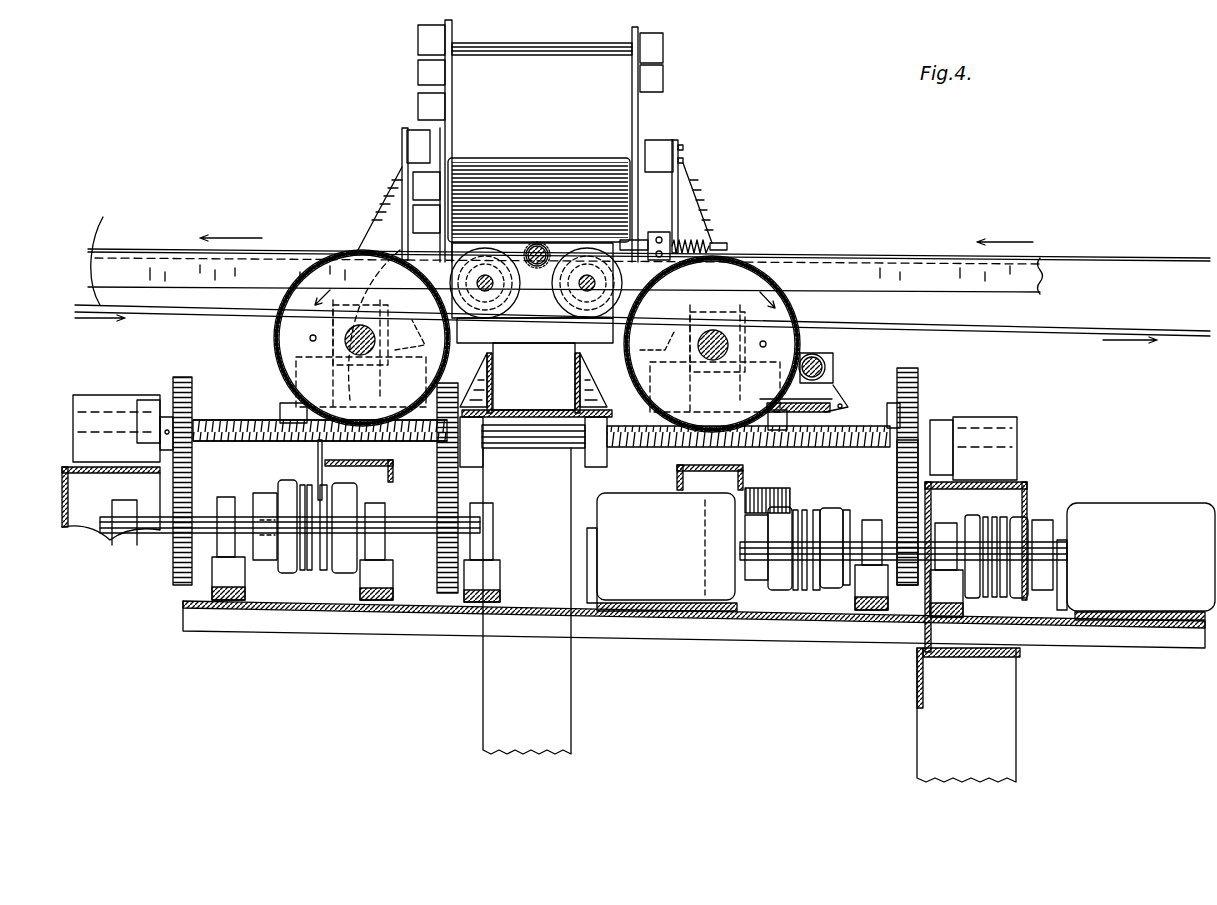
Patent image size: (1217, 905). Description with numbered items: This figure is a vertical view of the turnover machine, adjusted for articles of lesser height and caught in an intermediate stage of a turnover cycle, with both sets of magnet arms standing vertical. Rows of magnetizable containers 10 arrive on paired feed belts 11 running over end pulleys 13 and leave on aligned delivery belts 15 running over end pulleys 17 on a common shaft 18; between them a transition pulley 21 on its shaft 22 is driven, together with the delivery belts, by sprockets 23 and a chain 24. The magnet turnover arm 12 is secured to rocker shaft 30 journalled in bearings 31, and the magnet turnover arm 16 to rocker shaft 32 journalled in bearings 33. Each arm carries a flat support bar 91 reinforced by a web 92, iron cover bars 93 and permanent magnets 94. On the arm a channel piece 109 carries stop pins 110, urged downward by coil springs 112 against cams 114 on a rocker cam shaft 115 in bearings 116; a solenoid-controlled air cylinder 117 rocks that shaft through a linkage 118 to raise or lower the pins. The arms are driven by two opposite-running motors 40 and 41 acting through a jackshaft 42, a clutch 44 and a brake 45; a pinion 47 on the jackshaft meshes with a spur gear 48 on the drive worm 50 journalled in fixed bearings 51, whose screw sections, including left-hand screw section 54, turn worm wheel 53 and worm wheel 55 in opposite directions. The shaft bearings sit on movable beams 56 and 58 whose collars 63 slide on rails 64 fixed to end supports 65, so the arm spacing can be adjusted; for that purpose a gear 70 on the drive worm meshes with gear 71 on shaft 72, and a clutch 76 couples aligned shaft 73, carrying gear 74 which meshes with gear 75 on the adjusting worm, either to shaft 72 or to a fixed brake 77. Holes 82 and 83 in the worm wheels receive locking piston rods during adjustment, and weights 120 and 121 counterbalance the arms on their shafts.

The containers 10 is at (553, 43).
The feed belts 11 is at (1162, 250).
The magnet turnover arm 12 is at (697, 162).
The end pulleys 13 is at (600, 292).
The delivery belts 15 is at (100, 240).
The magnet turnover arm 16 is at (398, 133).
The end pulleys 17 is at (475, 285).
The common shaft 18 is at (500, 298).
The transition pulley 21 is at (560, 300).
The shaft of the transition pulley 22 is at (540, 245).
The sprockets 23 is at (530, 245).
The chain 24 is at (535, 343).
The rocker shaft 30 is at (720, 335).
The bearings 31 is at (657, 336).
The rocker shaft 32 is at (350, 335).
The bearings 33 is at (417, 334).
The motor 40 is at (1175, 503).
The motor 41 is at (662, 600).
The jackshaft 42 is at (997, 520).
The electro-magnetically controlled clutch 44 is at (800, 590).
The electro-magnetically controlled brake 45 is at (845, 590).
The pinion 47 is at (905, 590).
The spur gear 48 is at (918, 380).
The drive worm 50 is at (215, 420).
The fixed bearings 51 is at (148, 400).
The worm wheel 53 is at (750, 262).
The left-hand screw section 54 is at (228, 445).
The worm wheel 55 is at (318, 255).
The movable beam 56 is at (700, 480).
The movable beam 58 is at (375, 470).
The collars 63 is at (285, 403).
The rails 64 is at (270, 420).
The fixed end supports 65 is at (90, 395).
The gear 70 is at (178, 377).
The gear 71 is at (168, 560).
The shaft 72 is at (200, 535).
The shaft 73 is at (418, 535).
The gear 74 is at (445, 590).
The gear 75 is at (505, 412).
The electro-magnetically controlled clutch 76 is at (300, 573).
The fixed brake 77 is at (350, 573).
The hole 82 is at (766, 342).
The hole 83 is at (310, 338).
The flat support bar 91 is at (680, 150).
The web 92 is at (395, 180).
The cover bars 93 is at (663, 33).
The permanent magnets 94 is at (418, 105).
The channel piece 109 is at (407, 142).
The stop pins 110 is at (725, 243).
The coil springs 112 is at (690, 240).
The cams 114 is at (590, 270).
The rocker cam shaft 115 is at (822, 360).
The bearings 116 is at (840, 395).
The solenoid-controlled air cylinder 117 is at (595, 390).
The linkage 118 is at (830, 403).
The weights 120 is at (790, 493).
The weights 121 is at (318, 466).